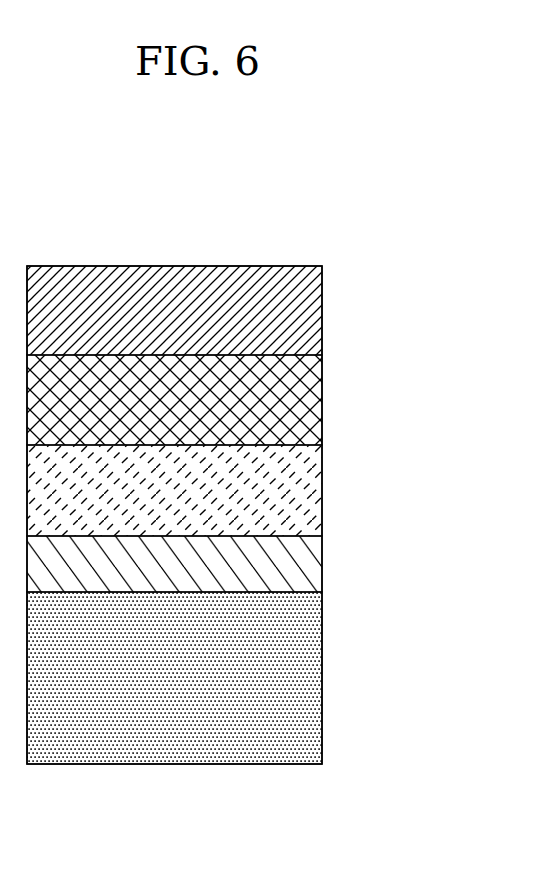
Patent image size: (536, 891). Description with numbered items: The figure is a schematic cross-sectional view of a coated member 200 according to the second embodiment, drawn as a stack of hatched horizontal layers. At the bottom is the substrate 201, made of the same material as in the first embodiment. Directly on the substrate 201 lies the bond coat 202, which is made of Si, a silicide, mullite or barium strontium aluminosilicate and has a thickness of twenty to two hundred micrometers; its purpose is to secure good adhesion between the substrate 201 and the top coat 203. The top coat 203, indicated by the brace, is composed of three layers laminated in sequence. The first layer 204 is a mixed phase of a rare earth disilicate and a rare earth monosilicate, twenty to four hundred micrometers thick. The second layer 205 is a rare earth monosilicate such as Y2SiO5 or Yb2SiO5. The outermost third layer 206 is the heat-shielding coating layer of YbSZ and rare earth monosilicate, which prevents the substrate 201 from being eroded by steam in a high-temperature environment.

The coated member 200 is at (352, 212).
The substrate 201 is at (292, 678).
The bond coat 202 is at (293, 566).
The top coat 203 is at (393, 285).
The first layer 204 is at (293, 488).
The second layer 205 is at (292, 397).
The third layer 206 is at (293, 312).